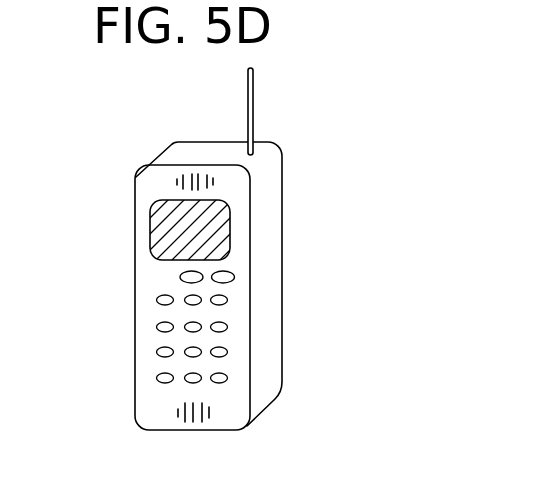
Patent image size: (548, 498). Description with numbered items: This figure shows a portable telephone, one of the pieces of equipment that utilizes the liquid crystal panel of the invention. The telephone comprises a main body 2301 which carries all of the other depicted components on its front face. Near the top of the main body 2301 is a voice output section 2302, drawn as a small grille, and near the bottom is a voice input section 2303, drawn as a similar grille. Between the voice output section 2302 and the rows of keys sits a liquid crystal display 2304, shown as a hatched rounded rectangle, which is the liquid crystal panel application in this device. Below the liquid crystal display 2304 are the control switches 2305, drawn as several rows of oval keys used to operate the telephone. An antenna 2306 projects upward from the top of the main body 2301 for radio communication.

The main body 2301 is at (172, 154).
The voice output section 2302 is at (175, 182).
The voice input section 2303 is at (175, 413).
The liquid crystal display 2304 is at (153, 235).
The control switches 2305 is at (180, 277).
The antenna 2306 is at (255, 112).